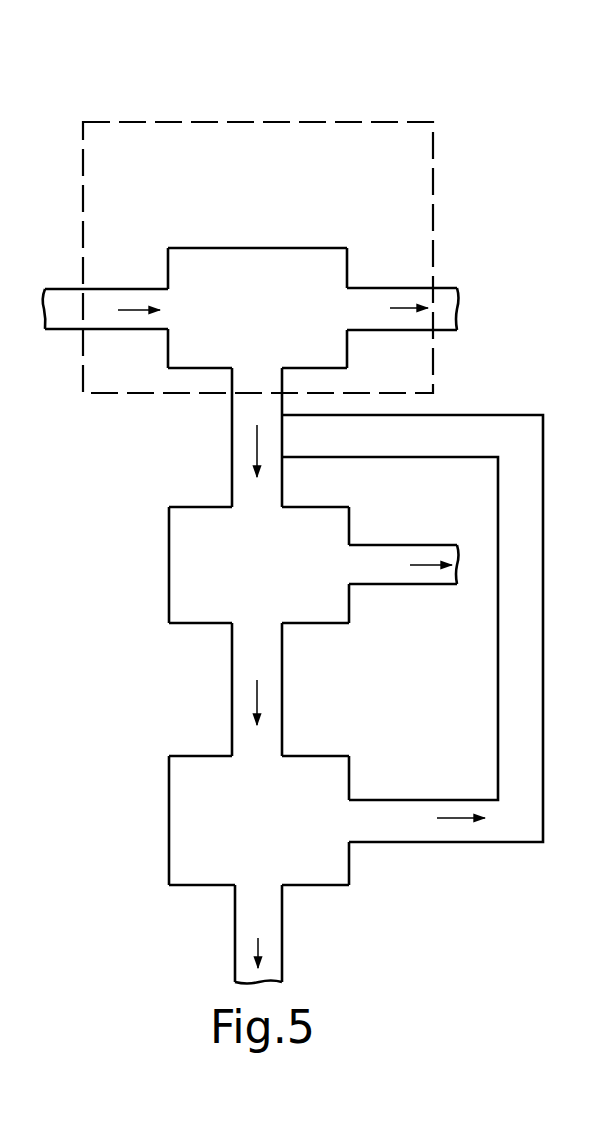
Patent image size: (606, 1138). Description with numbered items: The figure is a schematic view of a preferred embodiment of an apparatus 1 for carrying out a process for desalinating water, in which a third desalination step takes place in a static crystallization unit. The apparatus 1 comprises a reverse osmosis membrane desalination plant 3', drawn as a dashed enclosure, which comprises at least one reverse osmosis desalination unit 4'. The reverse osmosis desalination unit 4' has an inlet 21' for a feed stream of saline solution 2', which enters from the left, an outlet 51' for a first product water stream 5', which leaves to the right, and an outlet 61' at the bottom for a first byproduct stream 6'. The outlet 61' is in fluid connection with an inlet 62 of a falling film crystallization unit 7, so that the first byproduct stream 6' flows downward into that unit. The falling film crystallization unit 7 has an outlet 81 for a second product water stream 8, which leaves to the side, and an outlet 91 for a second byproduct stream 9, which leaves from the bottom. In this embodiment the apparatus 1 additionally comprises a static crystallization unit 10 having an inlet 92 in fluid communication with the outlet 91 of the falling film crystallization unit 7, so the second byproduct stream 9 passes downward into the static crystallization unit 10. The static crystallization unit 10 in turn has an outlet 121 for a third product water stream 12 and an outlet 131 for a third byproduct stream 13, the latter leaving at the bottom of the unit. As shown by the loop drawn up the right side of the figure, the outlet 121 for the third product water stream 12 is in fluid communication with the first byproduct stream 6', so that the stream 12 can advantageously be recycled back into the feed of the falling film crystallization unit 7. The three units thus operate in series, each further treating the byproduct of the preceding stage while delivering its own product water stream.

The apparatus 1 is at (190, 120).
The reverse osmosis membrane desalination plant 3' is at (251, 236).
The reverse osmosis desalination unit 4' is at (256, 328).
The feed stream of saline solution 2' is at (105, 309).
The first product water stream 5' is at (403, 308).
The inlet 21' is at (139, 294).
The outlet 51' is at (375, 289).
The outlet 61' is at (240, 407).
The first byproduct stream 6' is at (257, 437).
The inlet 62 is at (260, 505).
The falling film crystallization unit 7 is at (268, 572).
The outlet 81 is at (348, 563).
The second product water stream 8 is at (404, 566).
The outlet 91 is at (258, 622).
The second byproduct stream 9 is at (257, 689).
The inlet 92 is at (253, 753).
The static crystallization unit 10 is at (280, 829).
The third product water stream 12 is at (412, 630).
The outlet 121 is at (350, 818).
The third byproduct stream 13 is at (258, 934).
The outlet 131 is at (258, 885).